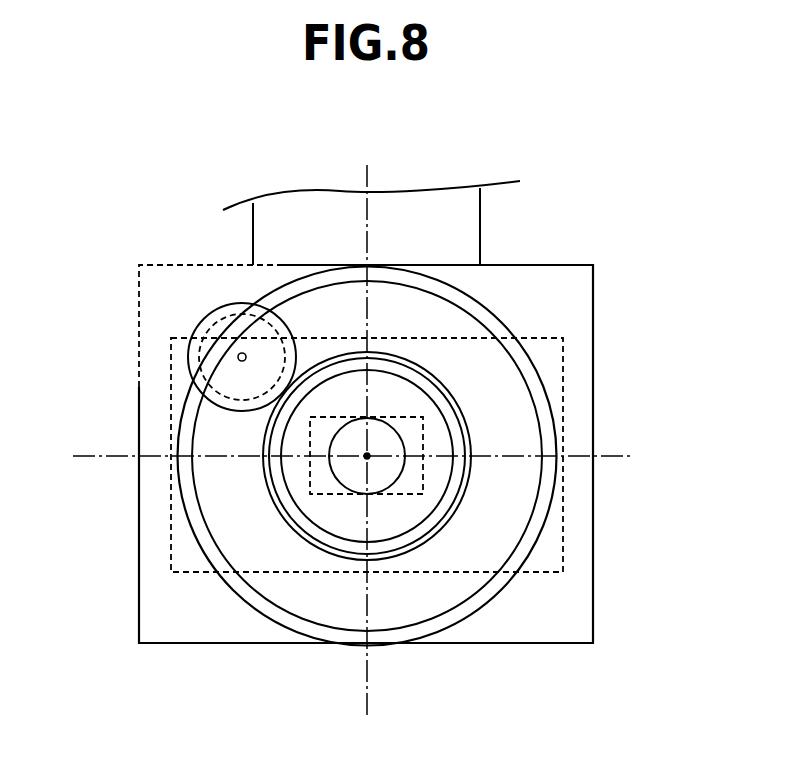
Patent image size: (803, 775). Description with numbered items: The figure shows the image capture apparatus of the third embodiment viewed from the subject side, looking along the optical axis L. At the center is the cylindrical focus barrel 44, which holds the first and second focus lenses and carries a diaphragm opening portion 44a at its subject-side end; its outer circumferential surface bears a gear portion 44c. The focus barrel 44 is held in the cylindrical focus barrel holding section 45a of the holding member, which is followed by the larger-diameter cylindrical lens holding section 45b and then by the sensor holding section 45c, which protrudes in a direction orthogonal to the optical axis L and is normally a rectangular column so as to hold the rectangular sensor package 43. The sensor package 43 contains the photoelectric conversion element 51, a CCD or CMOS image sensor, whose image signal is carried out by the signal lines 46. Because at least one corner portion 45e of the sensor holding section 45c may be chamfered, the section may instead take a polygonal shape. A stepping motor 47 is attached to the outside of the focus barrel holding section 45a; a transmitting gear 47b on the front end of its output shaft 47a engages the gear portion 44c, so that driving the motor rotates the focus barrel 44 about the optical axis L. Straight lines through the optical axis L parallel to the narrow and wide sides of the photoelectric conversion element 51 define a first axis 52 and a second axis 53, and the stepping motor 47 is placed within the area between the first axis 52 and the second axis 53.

The sensor package 43 is at (533, 330).
The focus barrel 44 is at (392, 525).
The diaphragm opening portion 44a is at (403, 466).
The gear portion 44c is at (320, 553).
The focus barrel holding section 45a is at (395, 356).
The lens holding section 45b is at (537, 398).
The sensor holding section 45c is at (535, 645).
The corner portion 45e is at (148, 282).
The signal lines 46 is at (457, 208).
The stepping motor 47 is at (187, 352).
The output shaft 47a is at (240, 359).
The transmitting gear 47b is at (213, 308).
The photoelectric conversion element 51 is at (402, 413).
The first axis 52 is at (367, 180).
The second axis 53 is at (157, 458).
The optical axis L is at (367, 456).